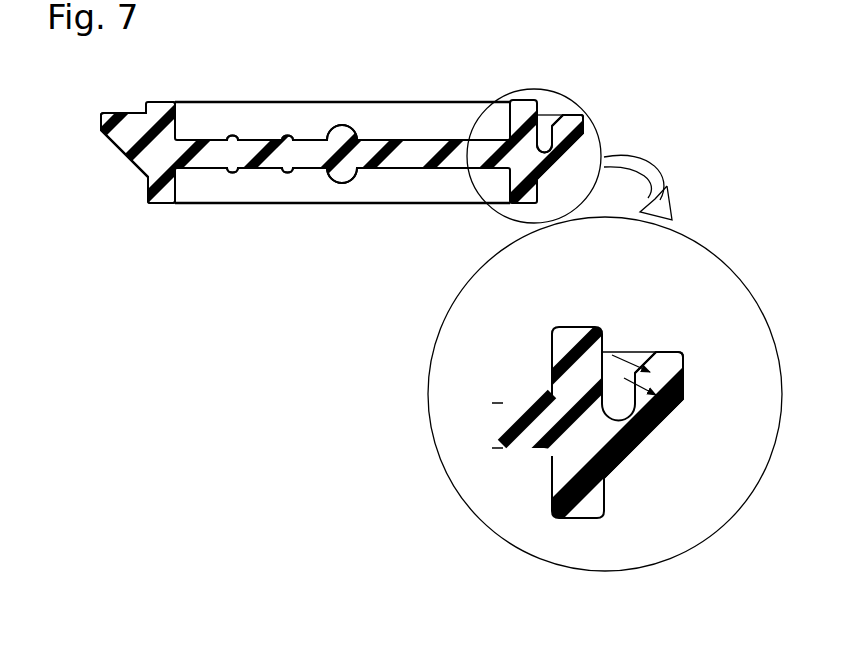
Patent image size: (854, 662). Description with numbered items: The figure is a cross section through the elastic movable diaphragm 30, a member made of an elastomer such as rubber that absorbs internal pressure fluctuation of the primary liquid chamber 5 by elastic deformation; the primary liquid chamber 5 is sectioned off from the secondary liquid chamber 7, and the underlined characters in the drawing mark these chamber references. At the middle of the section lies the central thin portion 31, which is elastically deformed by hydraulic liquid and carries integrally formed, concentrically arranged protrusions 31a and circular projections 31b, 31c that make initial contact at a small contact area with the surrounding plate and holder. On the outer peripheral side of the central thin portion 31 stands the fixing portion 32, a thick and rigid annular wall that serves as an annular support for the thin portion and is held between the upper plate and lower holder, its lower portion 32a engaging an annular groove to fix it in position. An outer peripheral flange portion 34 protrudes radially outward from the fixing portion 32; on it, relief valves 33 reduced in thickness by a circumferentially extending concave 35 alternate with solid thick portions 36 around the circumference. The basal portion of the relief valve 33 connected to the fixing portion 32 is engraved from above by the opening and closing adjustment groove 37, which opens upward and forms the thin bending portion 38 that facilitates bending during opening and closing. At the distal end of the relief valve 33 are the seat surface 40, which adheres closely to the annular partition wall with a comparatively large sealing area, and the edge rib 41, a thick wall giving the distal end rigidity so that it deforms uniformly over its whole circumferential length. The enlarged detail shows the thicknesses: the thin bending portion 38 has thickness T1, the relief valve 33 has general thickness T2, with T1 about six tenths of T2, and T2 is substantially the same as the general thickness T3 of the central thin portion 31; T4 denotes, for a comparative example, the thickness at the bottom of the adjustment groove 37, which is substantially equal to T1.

The primary liquid chamber 5 is at (496, 75).
The secondary liquid chamber 7 is at (443, 258).
The elastic movable diaphragm 30 is at (305, 95).
The central thin portion 31 is at (384, 150).
The protrusions 31a is at (343, 178).
The circular projection 31b is at (289, 172).
The circular projection 31c is at (233, 172).
The fixing portion 32 is at (169, 107).
The lower portion of fixing portion 32a is at (162, 201).
The relief valve 33 is at (569, 128).
The outer peripheral flange portion 34 is at (114, 111).
The concave portion 35 is at (619, 365).
The solid thick portion 36 is at (123, 147).
The opening and closing adjustment groove 37 is at (543, 125).
The thin bending portion 38 is at (632, 447).
The seat surface 40 is at (686, 352).
The edge rib 41 is at (653, 350).
The thickness of thin bending portion T1 is at (648, 433).
The general thickness of relief valve T2 is at (676, 400).
The general thickness of central thin portion T3 is at (512, 387).
The thickness of comparative example T4 is at (683, 406).